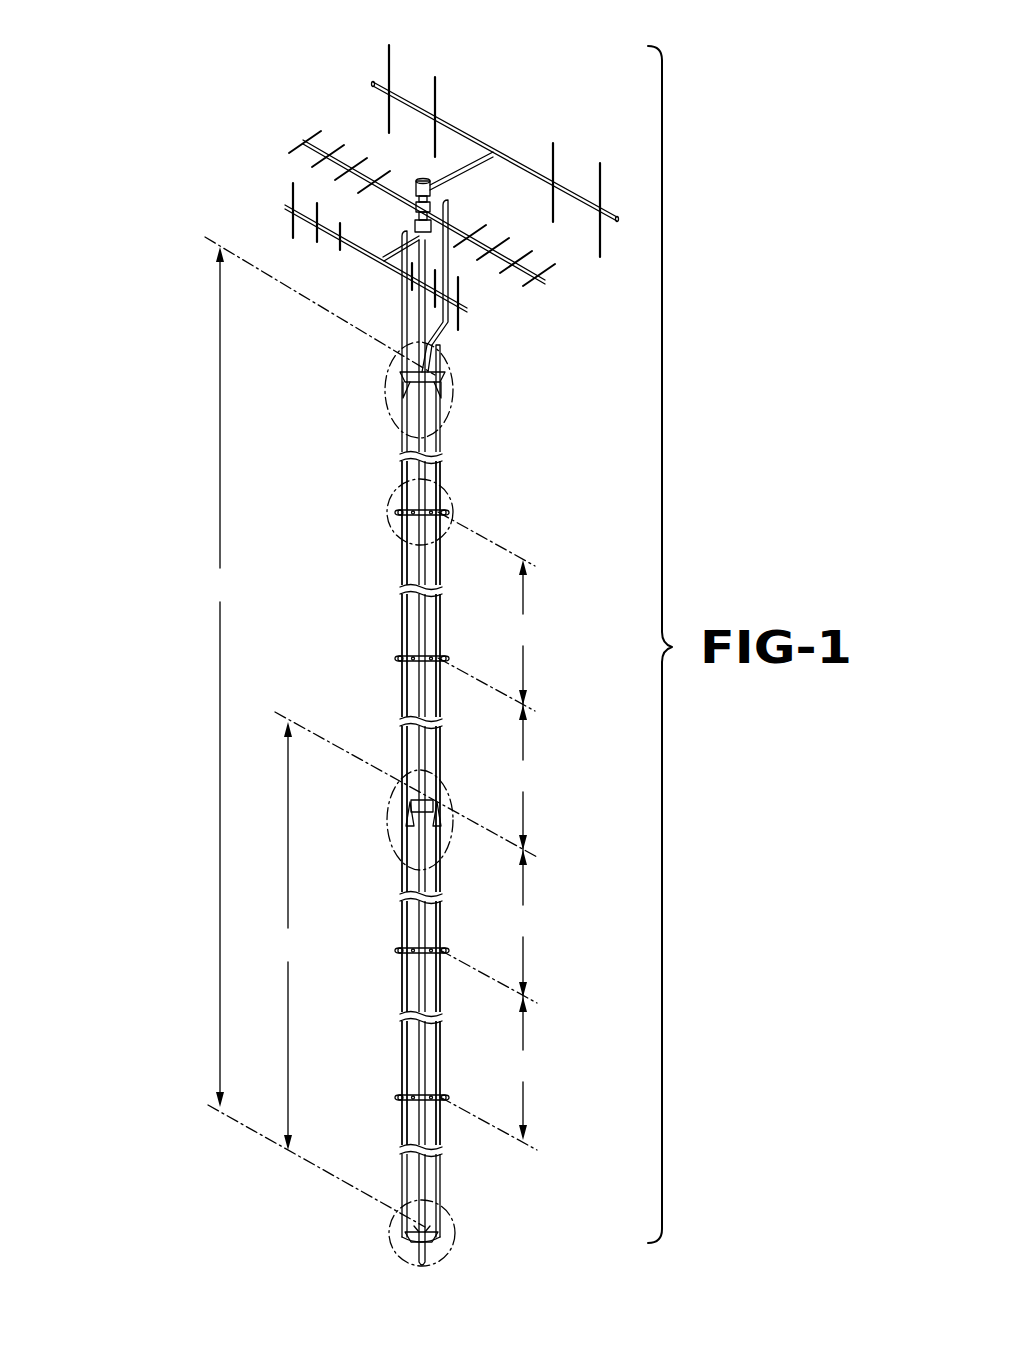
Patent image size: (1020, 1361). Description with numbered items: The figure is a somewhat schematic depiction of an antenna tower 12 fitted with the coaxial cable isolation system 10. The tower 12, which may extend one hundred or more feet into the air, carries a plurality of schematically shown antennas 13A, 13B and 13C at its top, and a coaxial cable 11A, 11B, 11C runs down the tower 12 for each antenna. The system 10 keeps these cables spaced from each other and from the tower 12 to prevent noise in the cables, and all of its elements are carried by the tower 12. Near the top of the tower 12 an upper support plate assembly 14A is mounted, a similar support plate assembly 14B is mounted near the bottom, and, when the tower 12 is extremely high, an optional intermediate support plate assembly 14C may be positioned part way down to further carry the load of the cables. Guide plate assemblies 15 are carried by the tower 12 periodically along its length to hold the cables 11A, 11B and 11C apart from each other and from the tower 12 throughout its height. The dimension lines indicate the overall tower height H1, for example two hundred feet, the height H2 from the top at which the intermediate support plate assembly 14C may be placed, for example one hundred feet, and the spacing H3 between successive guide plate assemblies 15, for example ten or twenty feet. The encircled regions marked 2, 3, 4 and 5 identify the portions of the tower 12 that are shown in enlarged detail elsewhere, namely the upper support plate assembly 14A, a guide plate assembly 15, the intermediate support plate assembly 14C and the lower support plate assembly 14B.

The coaxial cable isolation system 10 is at (100, 368).
The coaxial cable 11A is at (403, 449).
The coaxial cable 11B is at (423, 688).
The coaxial cable 11C is at (437, 628).
The antenna tower 12 is at (425, 306).
The antenna 13A is at (300, 142).
The antenna 13B is at (293, 194).
The antenna 13C is at (505, 152).
The upper support plate assembly 14A is at (470, 393).
The lower support plate assembly 14B is at (462, 1238).
The intermediate support plate assembly 14C is at (388, 828).
The guide plate assembly 15 is at (470, 505).
The detail area of FIG. 2 is at (386, 385).
The detail area of FIG. 3 is at (387, 508).
The detail area of FIG. 4 is at (387, 818).
The detail area of FIG. 5 is at (389, 1233).
The tower height H1 is at (219, 677).
The intermediate support height H2 is at (287, 936).
The guide plate spacing H3 is at (522, 850).